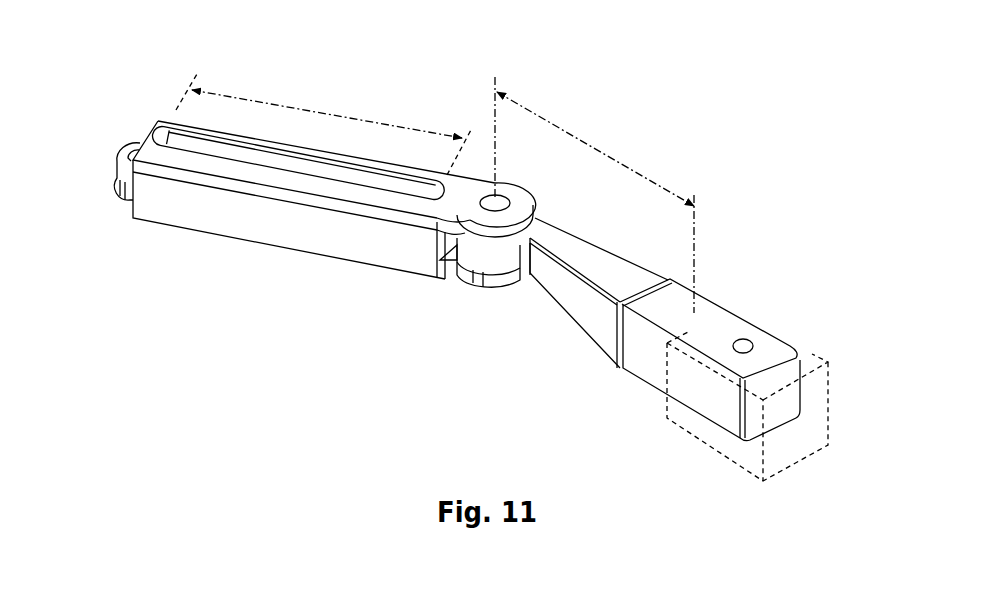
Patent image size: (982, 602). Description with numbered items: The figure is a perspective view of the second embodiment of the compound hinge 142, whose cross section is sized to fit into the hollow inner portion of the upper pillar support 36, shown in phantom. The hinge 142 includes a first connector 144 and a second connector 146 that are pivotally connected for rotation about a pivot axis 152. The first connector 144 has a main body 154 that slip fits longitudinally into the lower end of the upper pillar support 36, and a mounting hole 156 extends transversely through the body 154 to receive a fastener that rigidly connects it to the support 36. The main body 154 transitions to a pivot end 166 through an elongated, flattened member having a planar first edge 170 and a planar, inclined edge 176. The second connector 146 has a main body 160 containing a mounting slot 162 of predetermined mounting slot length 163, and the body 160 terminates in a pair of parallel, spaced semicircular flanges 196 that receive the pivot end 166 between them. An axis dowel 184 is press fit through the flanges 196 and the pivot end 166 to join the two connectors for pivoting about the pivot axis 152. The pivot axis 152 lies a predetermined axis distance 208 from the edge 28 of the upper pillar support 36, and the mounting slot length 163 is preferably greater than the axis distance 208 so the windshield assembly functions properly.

The edge 28 is at (700, 313).
The upper pillar support 36 is at (815, 352).
The compound hinge 142 is at (600, 290).
The first connector 144 is at (718, 333).
The second connector 146 is at (190, 243).
The pivot axis 152 is at (493, 112).
The main body 154 is at (725, 323).
The mounting hole 156 is at (748, 345).
The main body 160 is at (288, 228).
The mounting slot 162 is at (247, 157).
The mounting slot length 163 is at (288, 106).
The pivot end 166 is at (477, 254).
The planar first edge 170 is at (615, 257).
The planar, inclined edge 176 is at (582, 305).
The axis dowel 184 is at (503, 200).
The semicircular flanges 196 is at (518, 205).
The axis distance 208 is at (645, 178).